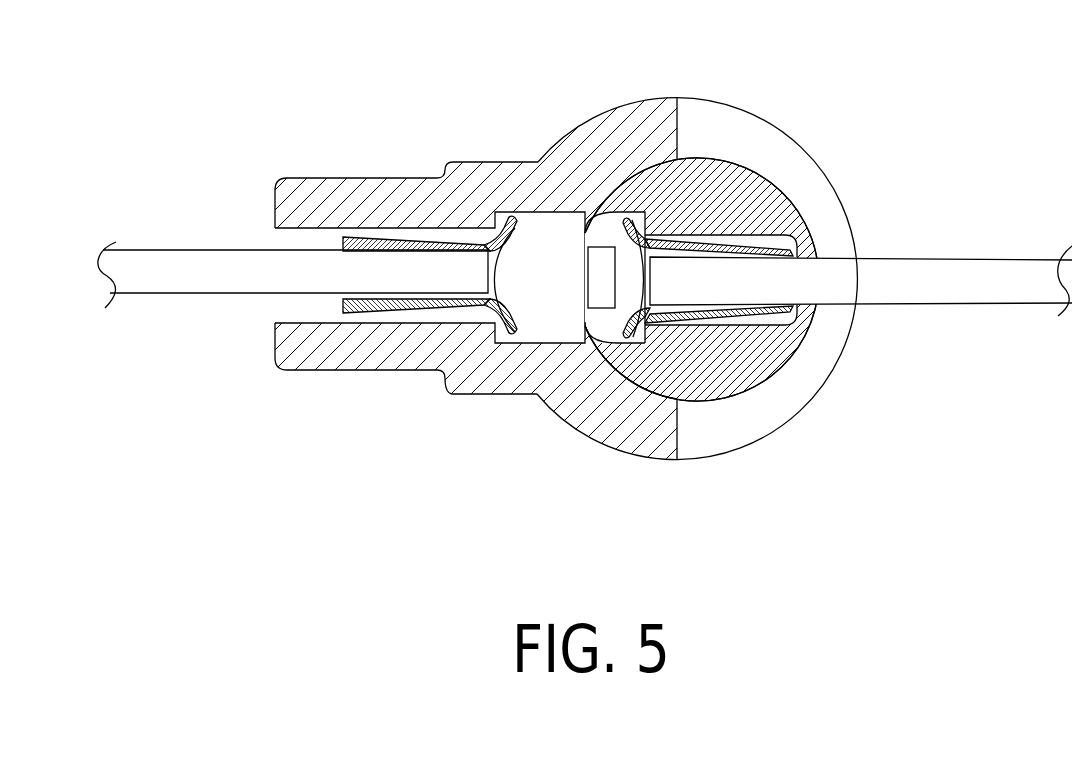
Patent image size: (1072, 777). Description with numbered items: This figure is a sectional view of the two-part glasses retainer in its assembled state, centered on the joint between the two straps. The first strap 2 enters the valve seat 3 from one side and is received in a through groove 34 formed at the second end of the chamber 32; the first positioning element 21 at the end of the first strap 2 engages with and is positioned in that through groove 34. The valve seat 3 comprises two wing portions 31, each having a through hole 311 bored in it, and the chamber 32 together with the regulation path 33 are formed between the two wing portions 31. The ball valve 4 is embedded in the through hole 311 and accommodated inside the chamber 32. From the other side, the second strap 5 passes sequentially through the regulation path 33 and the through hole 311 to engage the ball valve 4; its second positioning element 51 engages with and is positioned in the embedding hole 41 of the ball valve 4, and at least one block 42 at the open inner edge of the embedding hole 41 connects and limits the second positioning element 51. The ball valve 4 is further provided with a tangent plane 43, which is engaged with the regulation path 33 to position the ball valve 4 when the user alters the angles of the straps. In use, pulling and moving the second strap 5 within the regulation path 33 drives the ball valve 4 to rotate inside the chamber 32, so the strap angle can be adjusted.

The first strap 2 is at (158, 258).
The valve seat 3 is at (365, 356).
The wing portions 31 is at (760, 443).
The through hole 311 is at (650, 372).
The chamber 32 is at (702, 279).
The regulation path 33 is at (813, 197).
The through groove 34 is at (282, 259).
The ball valve 4 is at (787, 353).
The embedding hole 41 is at (720, 240).
The block 42 is at (603, 216).
The tangent plane 43 is at (585, 317).
The second strap 5 is at (968, 273).
The second positioning element 51 is at (644, 212).
The first positioning element 21 is at (510, 213).